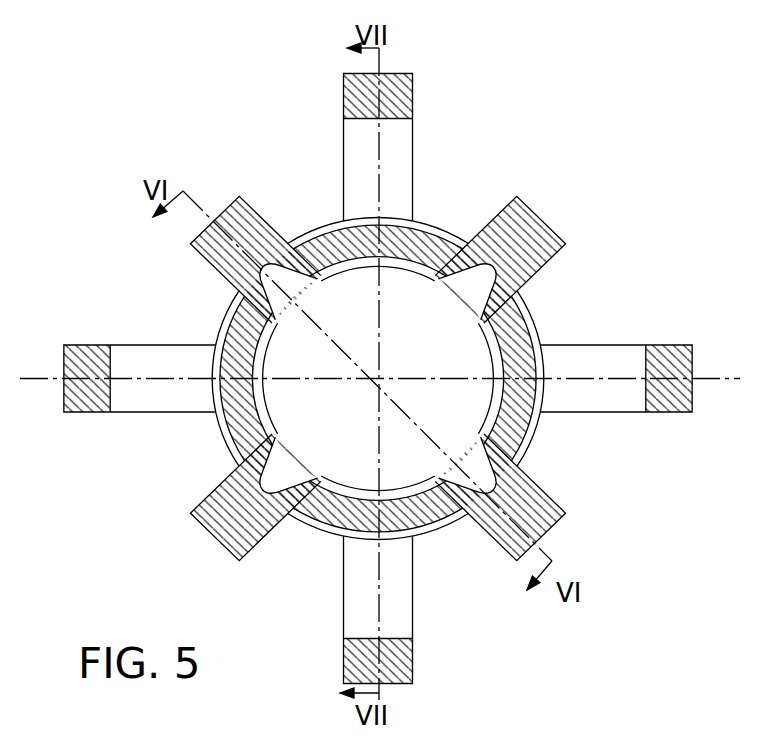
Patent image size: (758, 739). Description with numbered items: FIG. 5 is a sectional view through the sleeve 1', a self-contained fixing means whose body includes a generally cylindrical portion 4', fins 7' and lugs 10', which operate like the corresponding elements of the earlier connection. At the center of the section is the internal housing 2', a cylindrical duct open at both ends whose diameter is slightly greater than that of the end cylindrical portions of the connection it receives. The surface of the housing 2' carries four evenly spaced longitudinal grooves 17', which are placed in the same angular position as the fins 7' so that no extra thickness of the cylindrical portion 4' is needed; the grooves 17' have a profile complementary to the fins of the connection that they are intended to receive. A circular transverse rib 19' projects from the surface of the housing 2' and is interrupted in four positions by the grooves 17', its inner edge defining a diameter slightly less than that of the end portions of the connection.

The sleeve 1' is at (378, 323).
The internal housing 2' is at (378, 378).
The cylindrical portion 4' is at (414, 378).
The fins 7' is at (513, 255).
The lugs 10' is at (630, 407).
The longitudinal grooves 17' is at (451, 296).
The circular transverse rib 19' is at (466, 450).